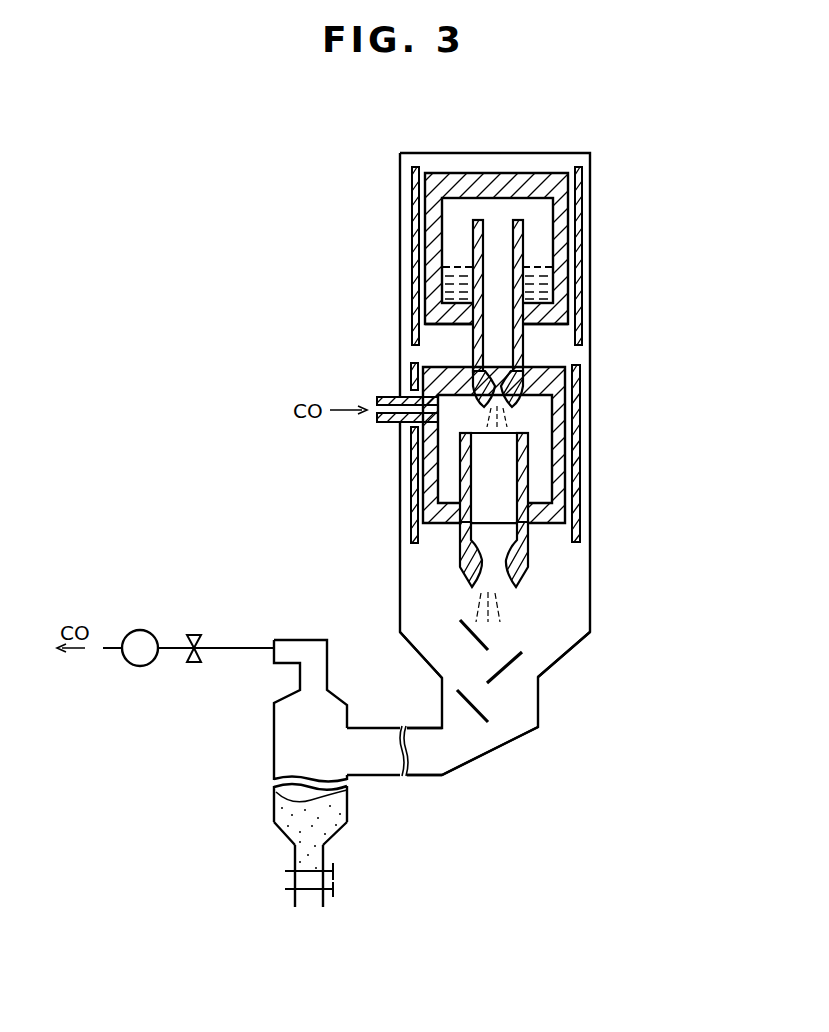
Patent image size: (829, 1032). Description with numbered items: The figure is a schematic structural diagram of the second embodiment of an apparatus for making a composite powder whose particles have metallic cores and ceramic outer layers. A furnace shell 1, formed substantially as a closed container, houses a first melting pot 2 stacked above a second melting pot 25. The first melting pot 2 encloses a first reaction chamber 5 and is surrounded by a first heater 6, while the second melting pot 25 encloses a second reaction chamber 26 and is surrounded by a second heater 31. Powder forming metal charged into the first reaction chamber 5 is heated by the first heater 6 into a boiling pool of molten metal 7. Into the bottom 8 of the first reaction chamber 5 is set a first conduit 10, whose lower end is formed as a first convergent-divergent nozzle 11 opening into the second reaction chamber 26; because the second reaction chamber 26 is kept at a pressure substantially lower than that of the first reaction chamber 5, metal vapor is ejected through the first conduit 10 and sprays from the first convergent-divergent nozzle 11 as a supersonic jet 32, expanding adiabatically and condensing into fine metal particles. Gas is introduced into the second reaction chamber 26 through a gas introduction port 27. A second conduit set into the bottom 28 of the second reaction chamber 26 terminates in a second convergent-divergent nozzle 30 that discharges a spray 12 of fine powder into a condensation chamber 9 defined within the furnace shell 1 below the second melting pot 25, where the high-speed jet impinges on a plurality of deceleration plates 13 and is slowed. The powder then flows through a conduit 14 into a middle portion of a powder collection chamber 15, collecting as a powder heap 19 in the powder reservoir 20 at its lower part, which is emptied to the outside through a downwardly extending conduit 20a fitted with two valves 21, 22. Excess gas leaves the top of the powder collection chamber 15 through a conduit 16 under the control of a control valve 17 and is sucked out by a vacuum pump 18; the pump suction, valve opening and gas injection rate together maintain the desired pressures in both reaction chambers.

The furnace shell 1 is at (592, 157).
The first melting pot 2 is at (555, 312).
The first reaction chamber 5 is at (538, 237).
The first heater 6 is at (412, 201).
The molten metal 7 is at (548, 289).
The bottom of the first reaction chamber 8 is at (542, 322).
The condensation chamber 9 is at (525, 628).
The first conduit 10 is at (477, 348).
The first convergent-divergent nozzle 11 is at (515, 405).
The spray of particles 12 is at (475, 600).
The deceleration plates 13 is at (500, 663).
The conduit 14 is at (385, 737).
The powder collection chamber 15 is at (283, 750).
The conduit 16 is at (248, 647).
The control valve 17 is at (193, 635).
The vacuum pump 18 is at (140, 630).
The powder heap 19 is at (320, 827).
The powder reservoir 20 is at (287, 840).
The downwardly extending conduit 20a is at (300, 881).
The valve 21 is at (335, 872).
The valve 22 is at (335, 890).
The second melting pot 25 is at (545, 524).
The second reaction chamber 26 is at (540, 440).
The gas introduction port 27 is at (390, 397).
The bottom of the second reaction chamber 28 is at (448, 524).
The second convergent-divergent nozzle 30 is at (523, 580).
The second heater 31 is at (411, 499).
The jet 32 is at (487, 410).